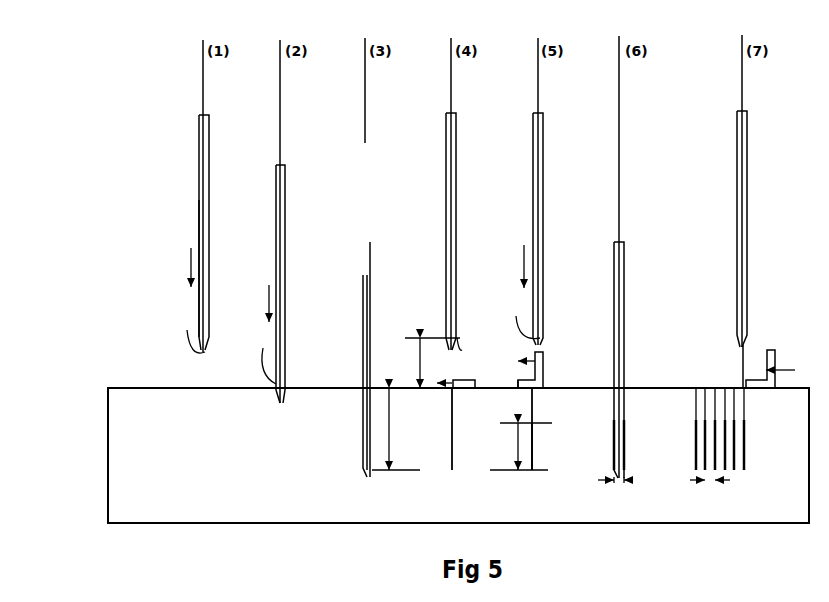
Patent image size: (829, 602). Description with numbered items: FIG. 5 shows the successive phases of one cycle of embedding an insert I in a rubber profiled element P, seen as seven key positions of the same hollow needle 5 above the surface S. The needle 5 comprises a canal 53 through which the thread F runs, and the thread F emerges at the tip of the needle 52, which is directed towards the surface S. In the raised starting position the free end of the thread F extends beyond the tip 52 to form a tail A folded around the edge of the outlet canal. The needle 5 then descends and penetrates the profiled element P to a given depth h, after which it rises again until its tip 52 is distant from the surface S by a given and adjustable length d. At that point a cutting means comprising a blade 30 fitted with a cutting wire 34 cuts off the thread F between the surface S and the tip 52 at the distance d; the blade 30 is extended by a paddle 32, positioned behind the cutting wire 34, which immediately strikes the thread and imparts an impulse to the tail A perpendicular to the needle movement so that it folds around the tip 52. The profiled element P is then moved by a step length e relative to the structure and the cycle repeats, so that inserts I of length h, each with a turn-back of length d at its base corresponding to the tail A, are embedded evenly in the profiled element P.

The thread F is at (200, 95).
The hollow needle 5 is at (199, 148).
The canal 53 is at (199, 192).
The tip of the needle 52 is at (212, 352).
The tail A is at (198, 348).
The surface S is at (134, 388).
The profiled element P is at (150, 491).
The blade 30 is at (455, 380).
The paddle 32 is at (540, 372).
The cutting wire 34 is at (518, 386).
The distance d is at (478, 404).
The depth of penetration h is at (396, 429).
The step length e is at (664, 489).
The insert l is at (532, 445).